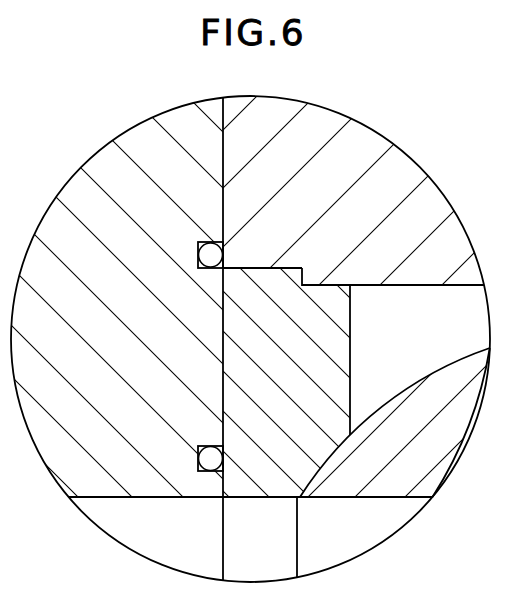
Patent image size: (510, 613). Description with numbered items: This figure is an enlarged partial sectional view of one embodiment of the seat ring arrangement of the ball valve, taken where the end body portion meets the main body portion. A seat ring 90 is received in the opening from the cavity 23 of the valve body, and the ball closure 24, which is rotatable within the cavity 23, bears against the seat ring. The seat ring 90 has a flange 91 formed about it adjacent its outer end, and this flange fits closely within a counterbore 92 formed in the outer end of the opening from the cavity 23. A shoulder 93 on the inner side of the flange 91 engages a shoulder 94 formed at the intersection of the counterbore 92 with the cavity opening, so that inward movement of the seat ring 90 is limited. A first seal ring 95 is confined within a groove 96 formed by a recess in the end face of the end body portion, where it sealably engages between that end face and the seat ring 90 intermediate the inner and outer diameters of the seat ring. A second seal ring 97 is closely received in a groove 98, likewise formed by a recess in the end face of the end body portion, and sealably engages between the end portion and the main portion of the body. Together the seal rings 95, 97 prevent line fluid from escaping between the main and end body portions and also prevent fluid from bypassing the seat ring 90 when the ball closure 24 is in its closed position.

The seat ring 90 is at (223, 358).
The flange 91 is at (278, 266).
The counterbore 92 is at (244, 271).
The shoulder 93 is at (304, 274).
The shoulder 94 is at (295, 278).
The first seal ring 95 is at (212, 461).
The groove 96 is at (212, 450).
The second seal ring 97 is at (214, 255).
The groove 98 is at (212, 250).
The cavity 23 is at (397, 287).
The ball closure 24 is at (462, 359).